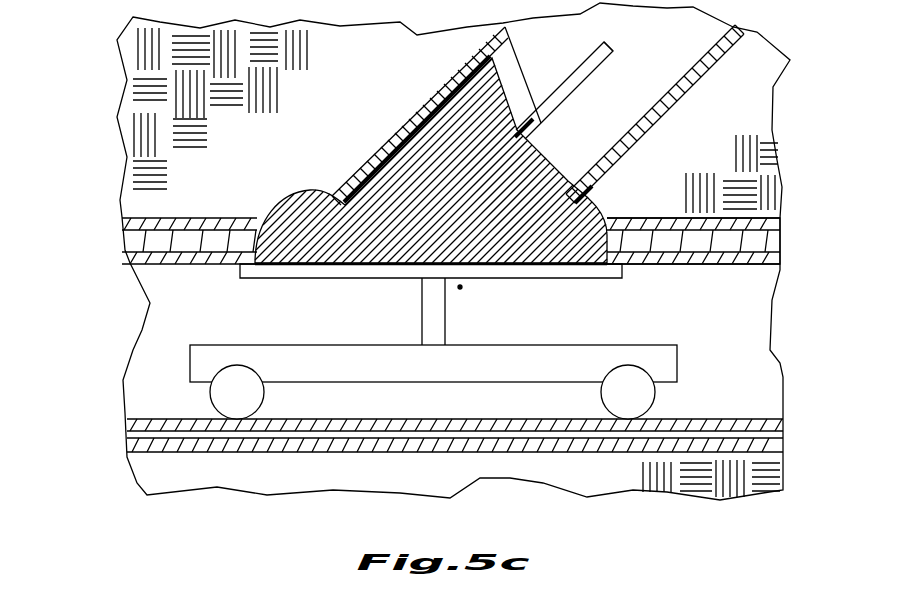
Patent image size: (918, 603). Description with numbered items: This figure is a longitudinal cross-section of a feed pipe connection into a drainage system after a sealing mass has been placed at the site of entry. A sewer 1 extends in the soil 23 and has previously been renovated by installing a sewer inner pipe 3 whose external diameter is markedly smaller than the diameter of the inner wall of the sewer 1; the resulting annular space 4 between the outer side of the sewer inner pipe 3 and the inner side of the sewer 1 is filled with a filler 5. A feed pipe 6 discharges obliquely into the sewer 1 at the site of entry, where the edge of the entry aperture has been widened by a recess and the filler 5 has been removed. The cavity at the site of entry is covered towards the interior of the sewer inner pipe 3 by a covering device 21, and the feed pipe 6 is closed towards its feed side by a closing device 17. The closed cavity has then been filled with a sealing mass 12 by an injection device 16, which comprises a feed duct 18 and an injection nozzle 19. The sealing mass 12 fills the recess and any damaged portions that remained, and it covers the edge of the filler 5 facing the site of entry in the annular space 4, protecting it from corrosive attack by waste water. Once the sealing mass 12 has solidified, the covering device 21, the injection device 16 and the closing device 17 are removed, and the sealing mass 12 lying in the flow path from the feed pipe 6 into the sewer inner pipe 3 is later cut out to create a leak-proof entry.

The sewer 1 is at (116, 222).
The sewer inner pipe 3 is at (122, 258).
The annular space 4 is at (455, 243).
The filler 5 is at (790, 243).
The feed pipe 6 is at (395, 128).
The sealing mass 12 is at (431, 168).
The injection device 16 is at (562, 114).
The closing device 17 is at (518, 97).
The feed duct 18 is at (615, 53).
The injection nozzle 19 is at (537, 134).
The covering device 21 is at (433, 348).
The soil 23 is at (453, 251).